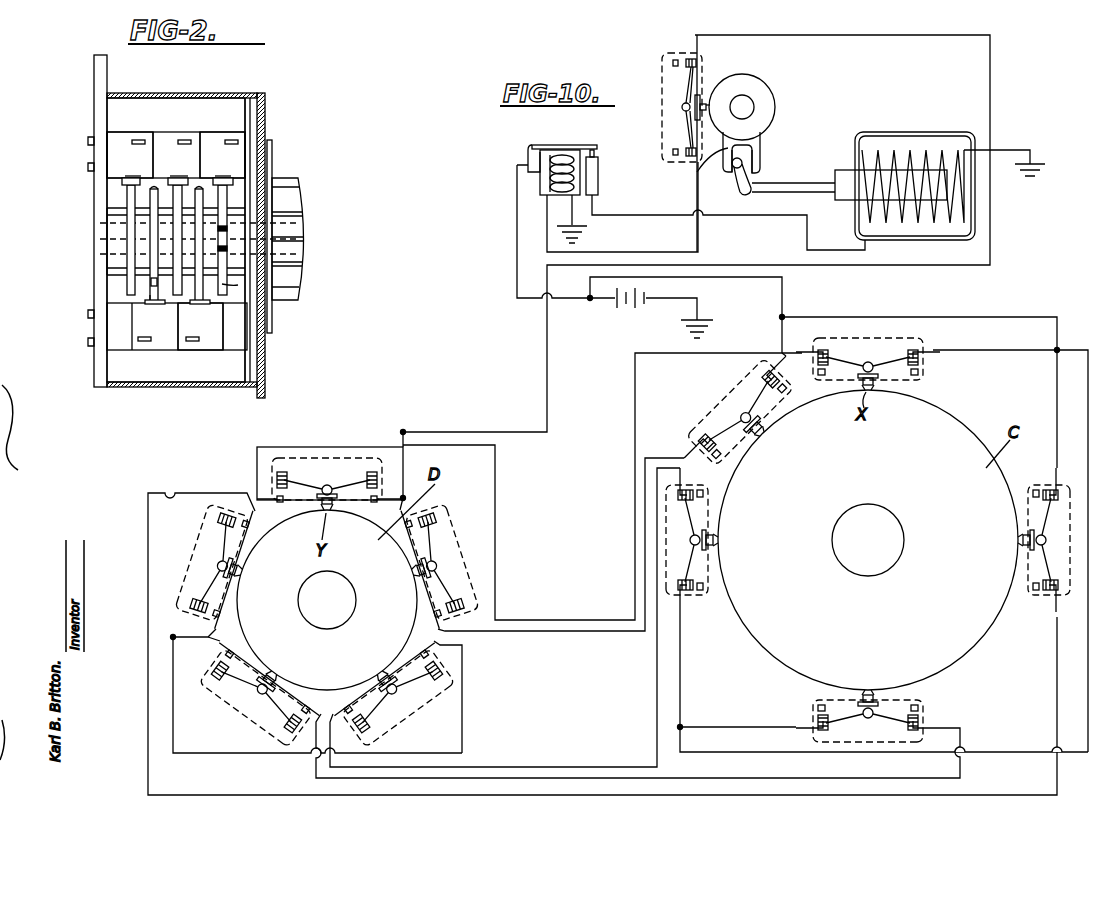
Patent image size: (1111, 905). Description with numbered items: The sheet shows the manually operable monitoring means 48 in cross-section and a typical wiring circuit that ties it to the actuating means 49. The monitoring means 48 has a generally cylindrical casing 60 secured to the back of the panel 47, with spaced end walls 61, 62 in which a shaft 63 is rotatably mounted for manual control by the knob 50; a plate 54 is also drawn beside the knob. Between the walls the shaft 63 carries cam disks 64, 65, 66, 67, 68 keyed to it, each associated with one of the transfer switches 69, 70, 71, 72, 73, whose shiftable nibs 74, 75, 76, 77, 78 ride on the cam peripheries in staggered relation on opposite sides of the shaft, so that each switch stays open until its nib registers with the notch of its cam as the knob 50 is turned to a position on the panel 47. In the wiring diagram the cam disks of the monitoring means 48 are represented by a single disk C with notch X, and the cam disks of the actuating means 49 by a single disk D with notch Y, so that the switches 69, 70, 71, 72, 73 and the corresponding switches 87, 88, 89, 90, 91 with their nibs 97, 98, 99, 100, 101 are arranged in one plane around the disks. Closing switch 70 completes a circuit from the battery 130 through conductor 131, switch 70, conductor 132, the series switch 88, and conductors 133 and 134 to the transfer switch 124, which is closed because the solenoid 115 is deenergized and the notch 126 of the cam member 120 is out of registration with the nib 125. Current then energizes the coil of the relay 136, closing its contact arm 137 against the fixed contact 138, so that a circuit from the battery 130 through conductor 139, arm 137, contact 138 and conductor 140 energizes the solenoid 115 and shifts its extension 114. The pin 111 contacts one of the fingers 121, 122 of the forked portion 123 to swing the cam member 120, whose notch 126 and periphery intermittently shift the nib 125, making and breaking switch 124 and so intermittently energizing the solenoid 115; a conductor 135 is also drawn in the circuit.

In FIG. 2, the panel 47 is at (262, 122).
In FIG. 2, the monitoring means 48 is at (223, 96).
In FIG. 10, the monitoring means 48 is at (977, 432).
In FIG. 10, the actuating means 49 is at (430, 507).
In FIG. 2, the knob 50 is at (287, 203).
In FIG. 2, the dial plate 54 is at (273, 330).
In FIG. 2, the casing 60 is at (148, 95).
In FIG. 2, the end wall 61 is at (94, 118).
In FIG. 2, the end wall 62 is at (250, 163).
In FIG. 2, the shaft 63 is at (100, 243).
In FIG. 2, the cam disk 64 is at (130, 280).
In FIG. 2, the cam disk 65 is at (152, 292).
In FIG. 2, the cam disk 66 is at (178, 193).
In FIG. 2, the cam disk 67 is at (202, 288).
In FIG. 2, the cam disk 68 is at (226, 284).
In FIG. 2, the transfer switch 69 is at (124, 144).
In FIG. 10, the transfer switch 69 is at (878, 332).
In FIG. 2, the transfer switch 70 is at (164, 340).
In FIG. 10, the transfer switch 70 is at (739, 405).
In FIG. 2, the transfer switch 71 is at (201, 162).
In FIG. 10, the transfer switch 71 is at (672, 530).
In FIG. 2, the transfer switch 72 is at (212, 340).
In FIG. 10, the transfer switch 72 is at (895, 733).
In FIG. 2, the transfer switch 73 is at (238, 152).
In FIG. 10, the transfer switch 73 is at (1055, 548).
In FIG. 2, the nib 74 is at (128, 183).
In FIG. 10, the nib 74 is at (876, 390).
In FIG. 2, the nib 75 is at (165, 300).
In FIG. 10, the nib 75 is at (760, 428).
In FIG. 2, the nib 76 is at (181, 183).
In FIG. 10, the nib 76 is at (712, 541).
In FIG. 2, the nib 77 is at (202, 300).
In FIG. 10, the nib 77 is at (862, 700).
In FIG. 2, the nib 78 is at (226, 183).
In FIG. 10, the nib 78 is at (1038, 540).
In FIG. 10, the transfer switch 87 is at (330, 467).
In FIG. 10, the transfer switch 88 is at (452, 563).
In FIG. 10, the transfer switch 89 is at (404, 700).
In FIG. 10, the transfer switch 90 is at (262, 710).
In FIG. 10, the transfer switch 91 is at (205, 558).
In FIG. 10, the nib 97 is at (332, 513).
In FIG. 10, the nib 98 is at (428, 580).
In FIG. 10, the nib 99 is at (385, 683).
In FIG. 10, the nib 100 is at (279, 689).
In FIG. 10, the nib 101 is at (241, 567).
In FIG. 10, the pin 111 is at (737, 171).
In FIG. 10, the extension 114 is at (785, 186).
In FIG. 10, the solenoid 115 is at (910, 133).
In FIG. 10, the cam member 120 is at (776, 104).
In FIG. 10, the finger 121 is at (697, 172).
In FIG. 10, the finger 122 is at (758, 160).
In FIG. 10, the forked portion 123 is at (753, 137).
In FIG. 10, the transfer switch 124 is at (666, 122).
In FIG. 10, the nib 125 is at (704, 105).
In FIG. 10, the notch 126 is at (709, 99).
In FIG. 10, the battery 130 is at (633, 300).
In FIG. 10, the conductor 131 is at (750, 278).
In FIG. 10, the conductor 132 is at (560, 608).
In FIG. 10, the conductor 133 is at (406, 456).
In FIG. 10, the conductor 134 is at (880, 36).
In FIG. 10, the conductor 135 is at (632, 252).
In FIG. 10, the relay 136 is at (556, 164).
In FIG. 10, the contact arm 137 is at (585, 146).
In FIG. 10, the fixed contact 138 is at (599, 179).
In FIG. 10, the conductor 139 is at (517, 237).
In FIG. 10, the conductor 140 is at (758, 217).